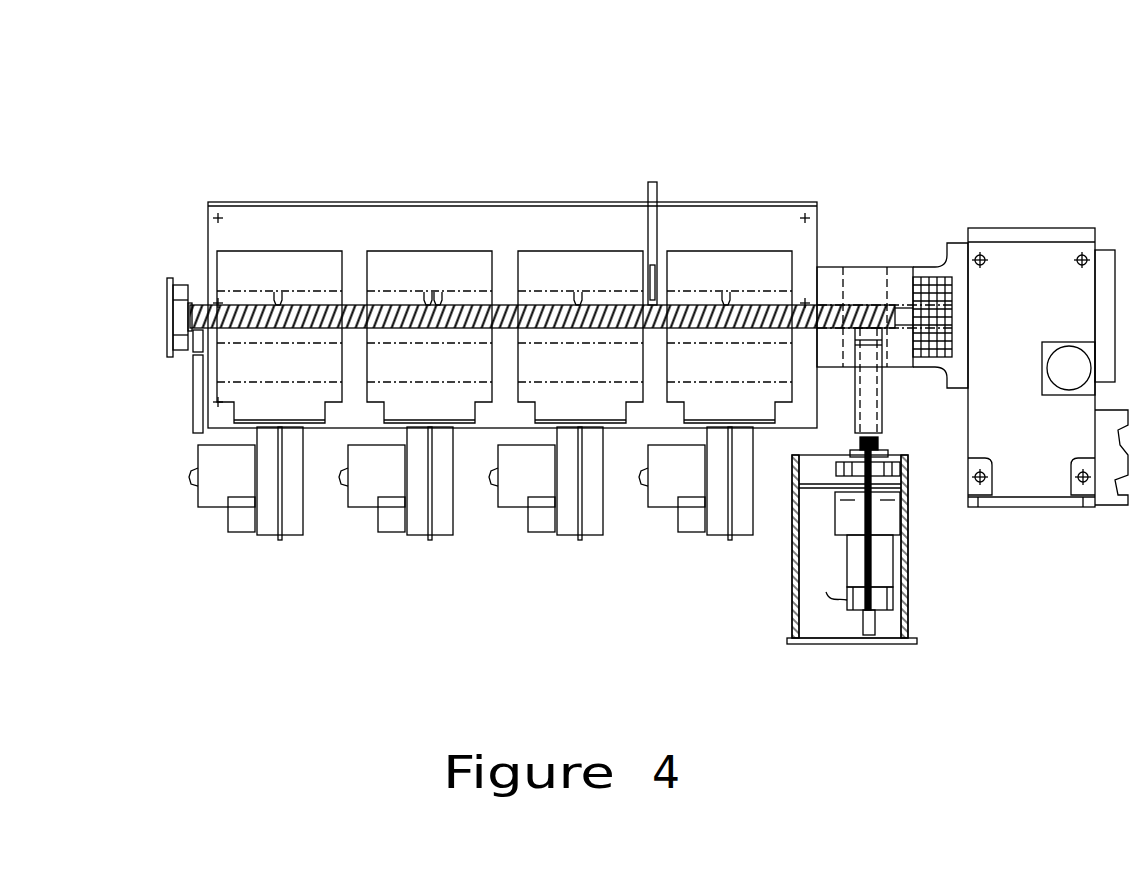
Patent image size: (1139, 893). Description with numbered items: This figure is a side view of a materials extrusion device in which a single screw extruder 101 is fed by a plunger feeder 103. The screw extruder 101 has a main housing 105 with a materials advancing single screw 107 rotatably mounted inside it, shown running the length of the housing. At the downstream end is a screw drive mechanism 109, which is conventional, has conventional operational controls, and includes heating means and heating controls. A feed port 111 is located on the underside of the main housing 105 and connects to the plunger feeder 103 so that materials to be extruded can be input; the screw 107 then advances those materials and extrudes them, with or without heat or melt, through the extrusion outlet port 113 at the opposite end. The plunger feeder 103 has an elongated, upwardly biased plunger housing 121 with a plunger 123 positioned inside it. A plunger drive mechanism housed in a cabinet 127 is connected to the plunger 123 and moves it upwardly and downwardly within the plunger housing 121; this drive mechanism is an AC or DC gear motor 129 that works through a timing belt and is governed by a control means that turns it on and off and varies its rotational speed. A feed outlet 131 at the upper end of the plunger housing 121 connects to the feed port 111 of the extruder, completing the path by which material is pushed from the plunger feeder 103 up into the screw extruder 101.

The single screw extruder 101 is at (731, 165).
The plunger feeder 103 is at (767, 605).
The main housing 105 is at (329, 201).
The materials advancing single screw 107 is at (500, 304).
The screw drive mechanism 109 is at (1030, 236).
The feed port 111 is at (893, 305).
The extrusion outlet port 113 is at (166, 284).
The plunger housing 121 is at (883, 334).
The plunger 123 is at (855, 445).
The cabinet 127 is at (910, 607).
The gear motor 129 is at (886, 563).
The feed outlet 131 is at (866, 336).